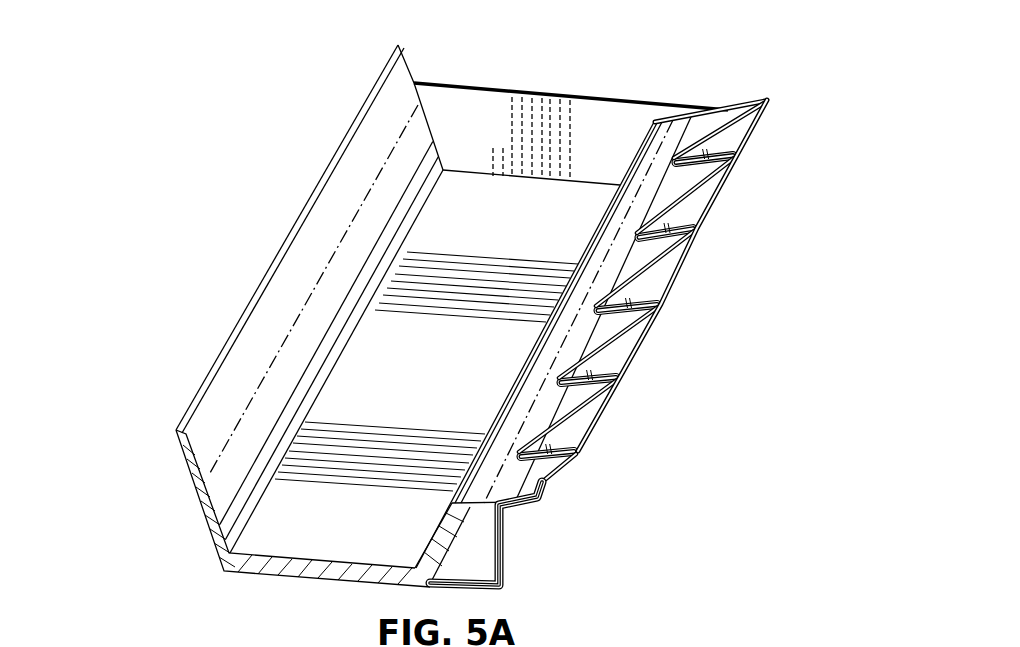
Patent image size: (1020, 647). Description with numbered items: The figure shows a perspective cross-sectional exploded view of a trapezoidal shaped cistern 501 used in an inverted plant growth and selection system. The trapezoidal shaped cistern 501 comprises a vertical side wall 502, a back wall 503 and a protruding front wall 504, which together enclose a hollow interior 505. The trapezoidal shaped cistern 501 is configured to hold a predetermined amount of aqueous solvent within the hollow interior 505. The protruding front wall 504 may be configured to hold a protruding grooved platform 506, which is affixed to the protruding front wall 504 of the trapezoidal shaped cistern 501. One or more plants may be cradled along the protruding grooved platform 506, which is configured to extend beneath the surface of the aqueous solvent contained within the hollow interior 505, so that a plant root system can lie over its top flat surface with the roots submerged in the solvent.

The trapezoidal shaped cistern 501 is at (268, 190).
The vertical side wall 502 is at (568, 140).
The back wall 503 is at (322, 255).
The protruding front wall 504 is at (457, 532).
The hollow interior 505 is at (372, 348).
The protruding grooved platform 506 is at (597, 338).